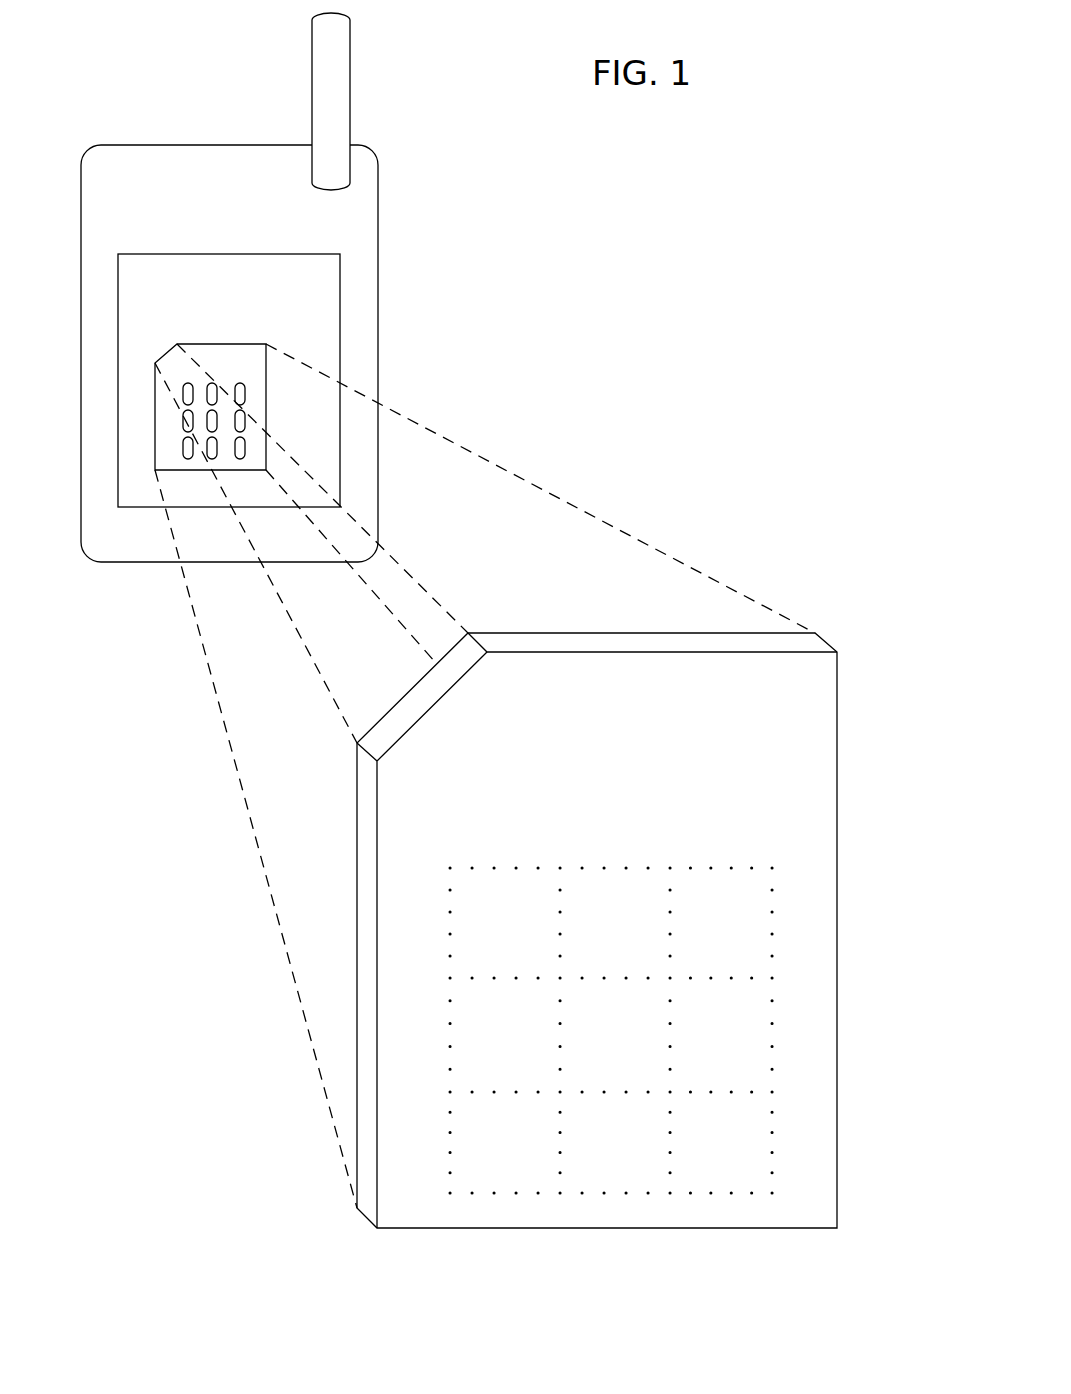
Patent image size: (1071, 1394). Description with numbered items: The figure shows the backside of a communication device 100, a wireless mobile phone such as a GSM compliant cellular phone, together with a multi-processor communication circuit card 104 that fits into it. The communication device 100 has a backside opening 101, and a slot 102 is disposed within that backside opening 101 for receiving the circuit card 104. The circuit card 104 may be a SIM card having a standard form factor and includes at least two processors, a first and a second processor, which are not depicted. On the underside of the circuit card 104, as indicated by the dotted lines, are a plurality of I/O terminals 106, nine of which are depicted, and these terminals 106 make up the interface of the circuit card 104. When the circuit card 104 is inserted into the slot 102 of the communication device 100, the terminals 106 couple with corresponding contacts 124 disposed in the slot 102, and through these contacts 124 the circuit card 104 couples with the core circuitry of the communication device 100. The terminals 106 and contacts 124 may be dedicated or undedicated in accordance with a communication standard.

The communication device 100 is at (165, 163).
The backside opening 101 is at (210, 277).
The slot 102 is at (238, 362).
The multi-processor communication circuit card 104 is at (782, 642).
The I/O terminals 106 is at (613, 923).
The contacts 124 is at (182, 390).